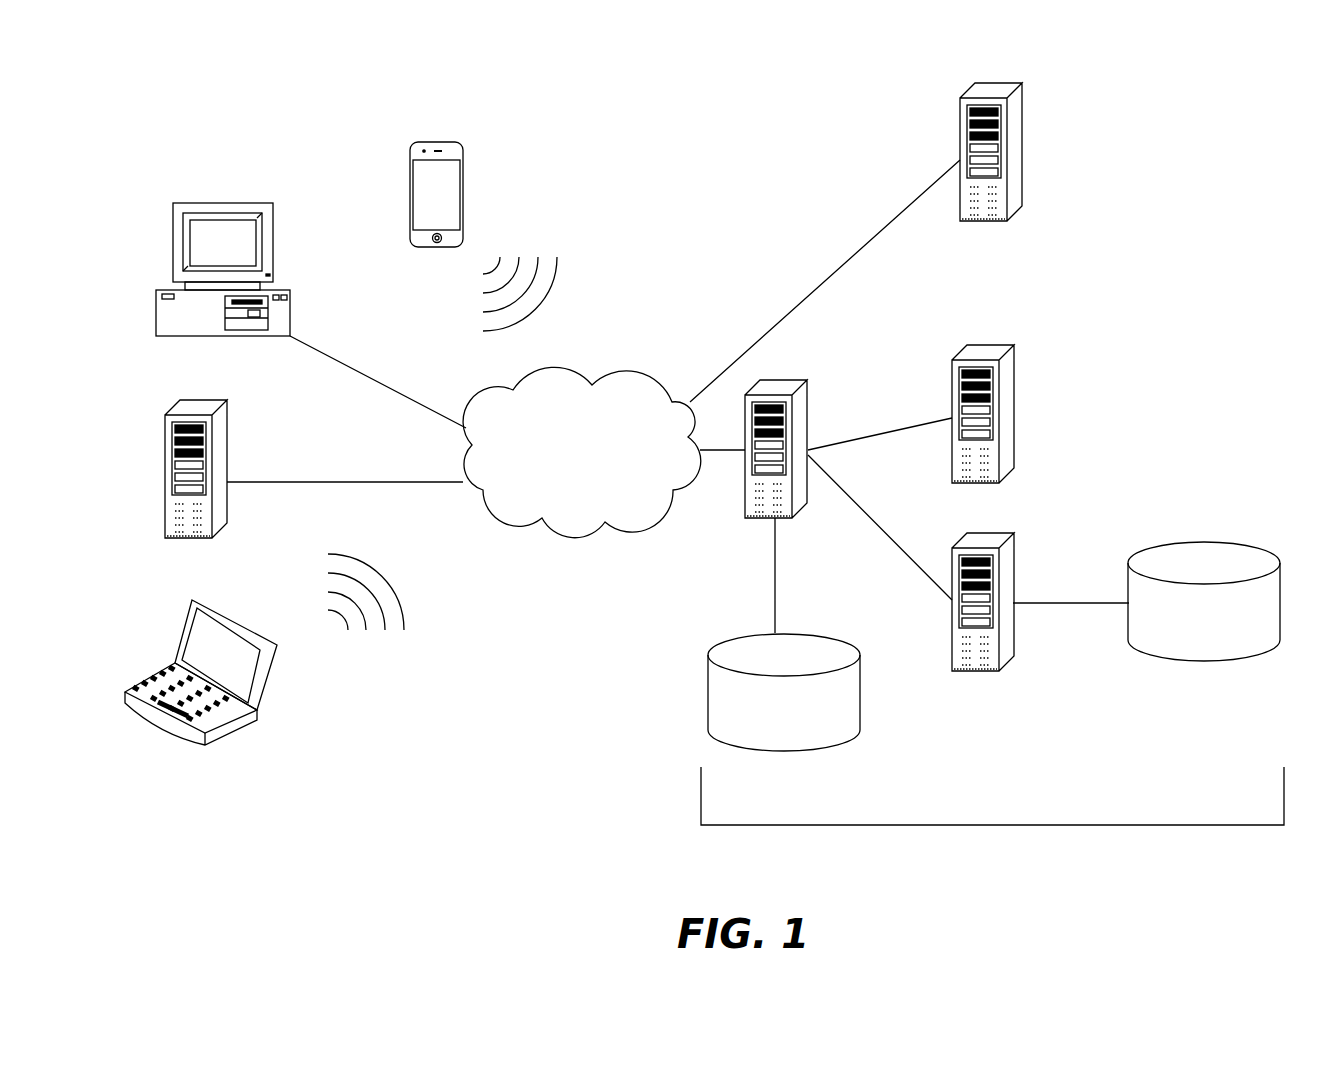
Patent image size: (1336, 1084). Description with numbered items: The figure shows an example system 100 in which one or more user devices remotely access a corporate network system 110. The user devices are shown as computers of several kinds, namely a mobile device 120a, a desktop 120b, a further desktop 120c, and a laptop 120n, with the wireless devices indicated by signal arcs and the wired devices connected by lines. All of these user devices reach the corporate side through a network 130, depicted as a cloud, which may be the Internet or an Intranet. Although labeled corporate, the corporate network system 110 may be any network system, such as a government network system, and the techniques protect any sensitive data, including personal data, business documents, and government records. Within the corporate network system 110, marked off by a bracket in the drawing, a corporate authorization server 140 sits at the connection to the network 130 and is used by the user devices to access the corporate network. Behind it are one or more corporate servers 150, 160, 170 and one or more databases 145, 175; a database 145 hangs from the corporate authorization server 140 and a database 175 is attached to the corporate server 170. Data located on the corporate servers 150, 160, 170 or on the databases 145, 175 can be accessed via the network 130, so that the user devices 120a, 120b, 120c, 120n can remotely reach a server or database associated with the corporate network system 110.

The system 100 is at (198, 135).
The corporate network system 110 is at (991, 825).
The mobile device 120a is at (463, 143).
The desktop 120b is at (272, 205).
The desktop 120c is at (217, 400).
The laptop 120n is at (267, 677).
The network 130 is at (640, 367).
The corporate authorization server 140 is at (787, 380).
The database 145 is at (835, 637).
The corporate server 150 is at (1020, 82).
The corporate server 160 is at (1010, 345).
The corporate server 170 is at (1010, 532).
The database 175 is at (1200, 543).